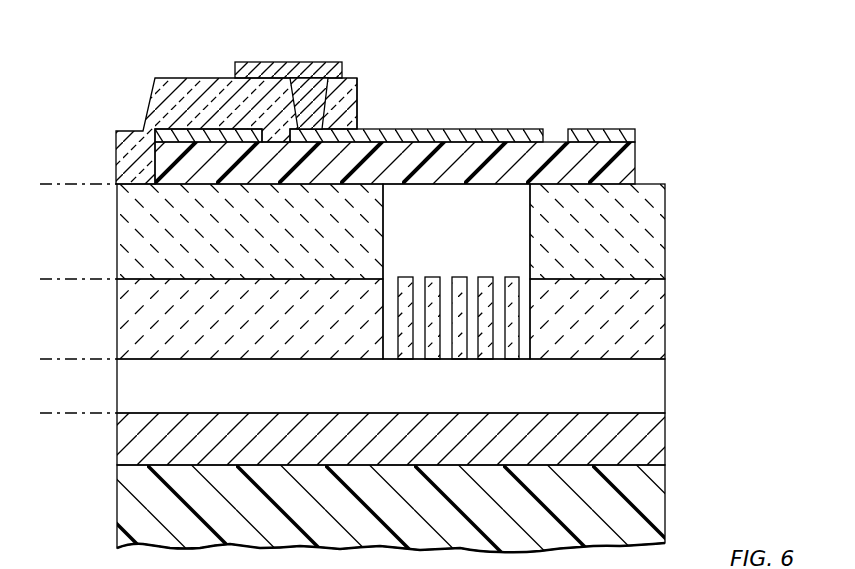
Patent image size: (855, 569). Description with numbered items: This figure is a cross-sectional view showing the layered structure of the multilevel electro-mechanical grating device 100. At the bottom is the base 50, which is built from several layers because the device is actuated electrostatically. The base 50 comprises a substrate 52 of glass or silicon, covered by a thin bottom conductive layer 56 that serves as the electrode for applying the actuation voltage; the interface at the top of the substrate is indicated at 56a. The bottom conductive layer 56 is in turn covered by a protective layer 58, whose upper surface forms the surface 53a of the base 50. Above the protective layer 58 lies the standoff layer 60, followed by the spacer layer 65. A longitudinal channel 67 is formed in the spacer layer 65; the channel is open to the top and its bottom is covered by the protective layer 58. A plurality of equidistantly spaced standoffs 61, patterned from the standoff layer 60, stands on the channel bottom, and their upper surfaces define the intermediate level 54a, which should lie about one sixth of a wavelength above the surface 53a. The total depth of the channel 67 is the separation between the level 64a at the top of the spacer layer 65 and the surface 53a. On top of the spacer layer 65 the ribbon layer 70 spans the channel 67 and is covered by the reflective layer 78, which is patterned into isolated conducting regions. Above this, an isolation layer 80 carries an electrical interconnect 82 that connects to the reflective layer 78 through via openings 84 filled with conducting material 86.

The base 50 is at (376, 436).
The substrate 52 is at (660, 505).
The surface of the base 53a is at (77, 359).
The intermediate level 54a is at (50, 279).
The bottom conductive layer 56 is at (660, 432).
The interface 56a is at (68, 413).
The protective layer 58 is at (655, 382).
The standoff layer 60 is at (657, 312).
The standoffs 61 is at (494, 277).
The level 64a is at (67, 184).
The spacer layer 65 is at (658, 215).
The longitudinal channel 67 is at (478, 228).
The ribbon layer 70 is at (627, 152).
The reflective layer 78 is at (477, 128).
The isolation layer 80 is at (167, 105).
The electrical interconnect 82 is at (253, 62).
The via openings 84 is at (338, 96).
The conducting material 86 is at (312, 88).
The multilevel electro-mechanical grating device 100 is at (376, 283).